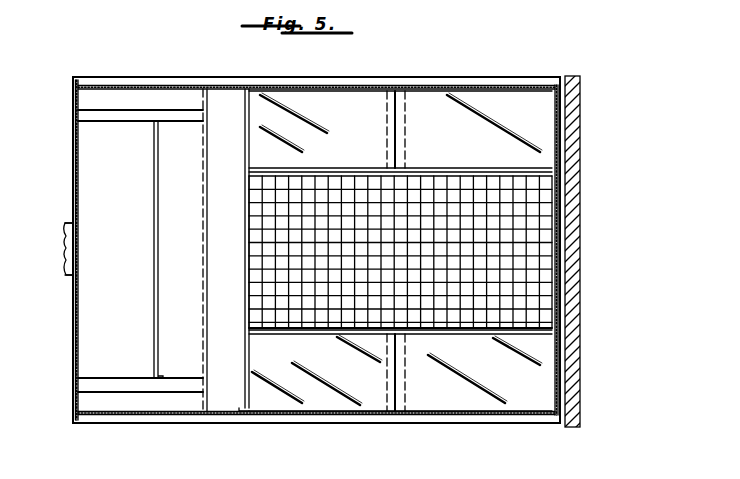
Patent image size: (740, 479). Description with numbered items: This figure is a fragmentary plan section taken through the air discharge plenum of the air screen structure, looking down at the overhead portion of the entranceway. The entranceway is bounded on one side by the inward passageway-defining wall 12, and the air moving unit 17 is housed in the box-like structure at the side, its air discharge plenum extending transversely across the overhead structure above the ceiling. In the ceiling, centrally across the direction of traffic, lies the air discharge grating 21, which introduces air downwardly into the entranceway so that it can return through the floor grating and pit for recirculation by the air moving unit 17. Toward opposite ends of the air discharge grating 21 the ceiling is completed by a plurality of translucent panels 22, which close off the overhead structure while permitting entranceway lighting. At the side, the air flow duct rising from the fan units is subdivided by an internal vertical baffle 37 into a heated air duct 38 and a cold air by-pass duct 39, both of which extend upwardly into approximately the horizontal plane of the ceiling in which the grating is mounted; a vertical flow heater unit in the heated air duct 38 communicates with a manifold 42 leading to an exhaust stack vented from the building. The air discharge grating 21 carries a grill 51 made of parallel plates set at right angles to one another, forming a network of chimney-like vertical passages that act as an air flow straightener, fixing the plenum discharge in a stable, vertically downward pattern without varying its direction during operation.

The passageway-defining wall 12 is at (580, 270).
The air moving unit 17 is at (72, 202).
The air discharge grating 21 is at (546, 219).
The translucent panels 22 is at (320, 97).
The internal vertical baffle 37 is at (173, 293).
The heated air duct 38 is at (87, 144).
The cold air by-pass duct 39 is at (192, 175).
The manifold 42 is at (70, 275).
The grill 51 is at (527, 312).